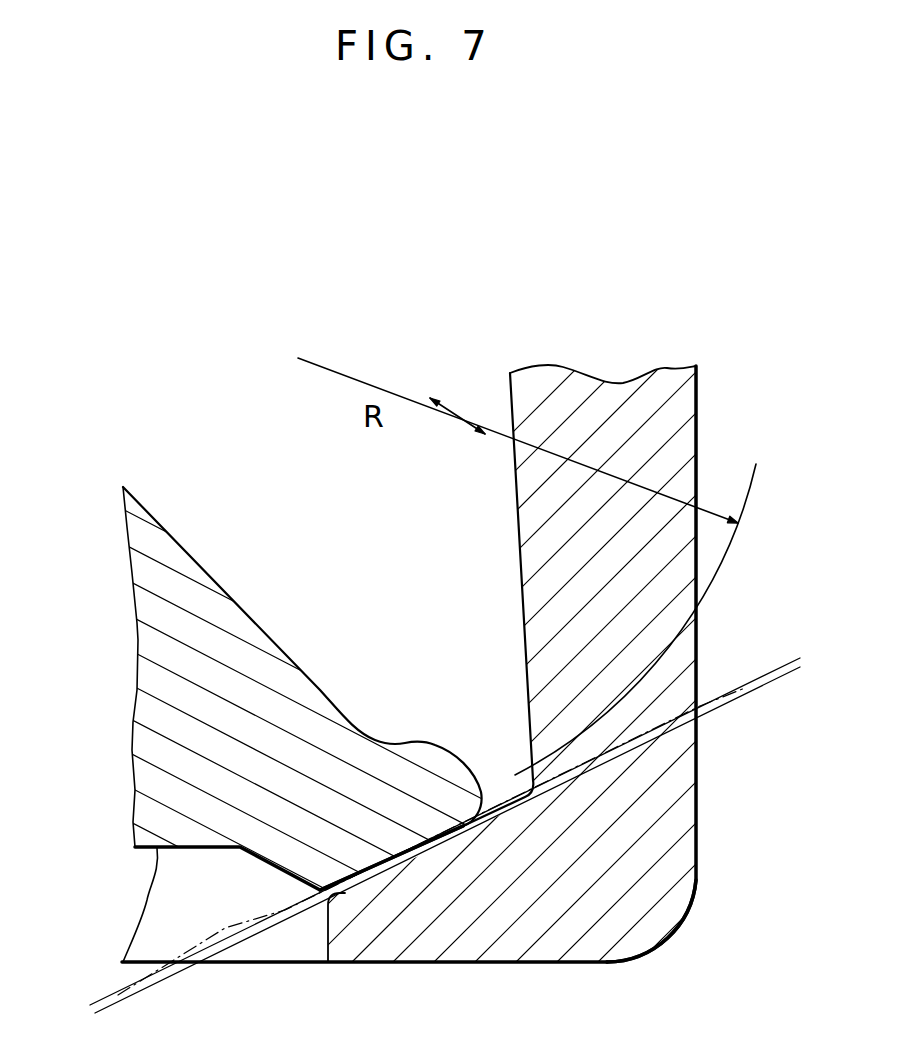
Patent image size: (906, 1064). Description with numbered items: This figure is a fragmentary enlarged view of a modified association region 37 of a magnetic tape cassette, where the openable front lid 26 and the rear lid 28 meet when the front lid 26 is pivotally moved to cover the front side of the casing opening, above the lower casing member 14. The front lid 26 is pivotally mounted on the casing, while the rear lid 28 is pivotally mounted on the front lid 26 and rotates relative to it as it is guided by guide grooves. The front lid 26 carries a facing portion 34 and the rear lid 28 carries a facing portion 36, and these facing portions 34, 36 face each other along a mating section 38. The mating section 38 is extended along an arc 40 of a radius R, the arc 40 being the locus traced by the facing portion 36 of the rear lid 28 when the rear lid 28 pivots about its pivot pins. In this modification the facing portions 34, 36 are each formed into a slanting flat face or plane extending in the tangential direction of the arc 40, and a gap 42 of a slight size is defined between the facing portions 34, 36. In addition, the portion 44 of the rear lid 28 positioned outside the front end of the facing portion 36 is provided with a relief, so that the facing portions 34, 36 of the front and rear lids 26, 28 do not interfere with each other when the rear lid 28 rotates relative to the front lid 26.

The lower casing member 14 is at (223, 957).
The front lid 26 is at (698, 800).
The rear lid 28 is at (247, 610).
The facing portion 34 is at (504, 798).
The facing portion 36 is at (381, 881).
The association region 37 is at (708, 941).
The mating section 38 is at (462, 826).
The arc 40 is at (732, 536).
The gap 42 is at (733, 645).
The portion of the rear lid 44 is at (518, 794).